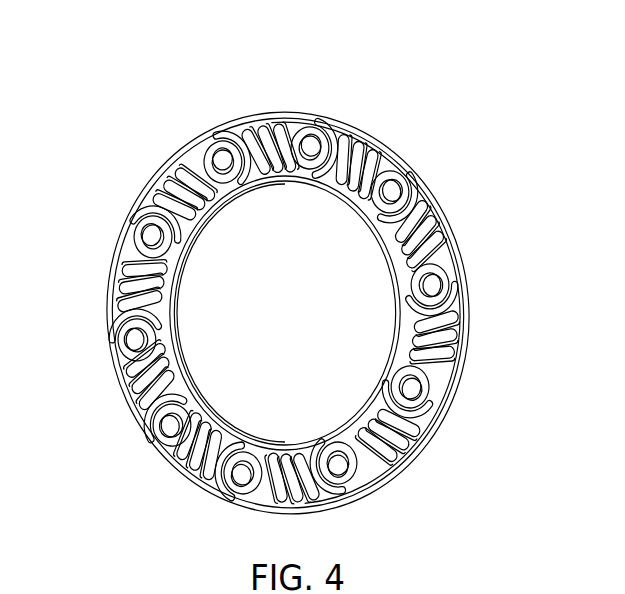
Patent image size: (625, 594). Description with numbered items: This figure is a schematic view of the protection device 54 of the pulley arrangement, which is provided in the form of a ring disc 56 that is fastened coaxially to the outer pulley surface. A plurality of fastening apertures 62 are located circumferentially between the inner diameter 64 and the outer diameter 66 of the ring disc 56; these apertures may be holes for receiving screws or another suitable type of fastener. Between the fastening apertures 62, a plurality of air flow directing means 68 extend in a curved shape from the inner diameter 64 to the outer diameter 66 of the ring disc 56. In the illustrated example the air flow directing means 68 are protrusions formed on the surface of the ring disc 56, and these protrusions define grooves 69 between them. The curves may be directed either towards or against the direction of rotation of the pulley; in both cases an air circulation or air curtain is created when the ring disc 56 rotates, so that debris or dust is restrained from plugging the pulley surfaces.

The protection device 54 is at (467, 92).
The ring disc 56 is at (447, 240).
The fastening apertures 62 is at (412, 390).
The inner diameter 64 is at (173, 342).
The outer diameter 66 is at (124, 246).
The air flow directing means 68 is at (142, 430).
The grooves 69 is at (183, 365).